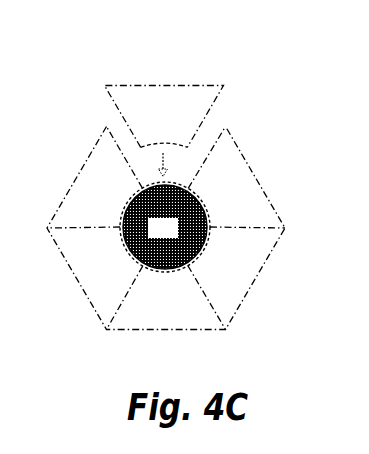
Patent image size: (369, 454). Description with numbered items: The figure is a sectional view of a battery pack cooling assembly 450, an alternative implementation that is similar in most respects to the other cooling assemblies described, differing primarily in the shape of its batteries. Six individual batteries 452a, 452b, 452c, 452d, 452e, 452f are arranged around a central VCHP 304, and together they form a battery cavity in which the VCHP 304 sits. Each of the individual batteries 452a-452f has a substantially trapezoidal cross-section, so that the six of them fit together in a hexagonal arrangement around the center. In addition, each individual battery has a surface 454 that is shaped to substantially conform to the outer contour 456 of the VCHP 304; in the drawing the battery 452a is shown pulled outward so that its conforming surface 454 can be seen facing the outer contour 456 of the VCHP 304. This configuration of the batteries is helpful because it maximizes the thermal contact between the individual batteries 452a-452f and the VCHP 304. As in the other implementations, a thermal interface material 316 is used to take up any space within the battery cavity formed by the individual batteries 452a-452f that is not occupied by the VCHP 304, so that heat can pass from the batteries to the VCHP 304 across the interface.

The battery pack cooling assembly 450 is at (262, 48).
The individual battery 452a is at (144, 126).
The individual battery 452b is at (115, 171).
The individual battery 452c is at (86, 254).
The individual battery 452d is at (147, 306).
The individual battery 452e is at (217, 284).
The individual battery 452f is at (236, 178).
The VCHP 304 is at (175, 236).
The thermal interface material 316 is at (202, 213).
The surface 454 is at (160, 144).
The outer contour 456 is at (155, 185).